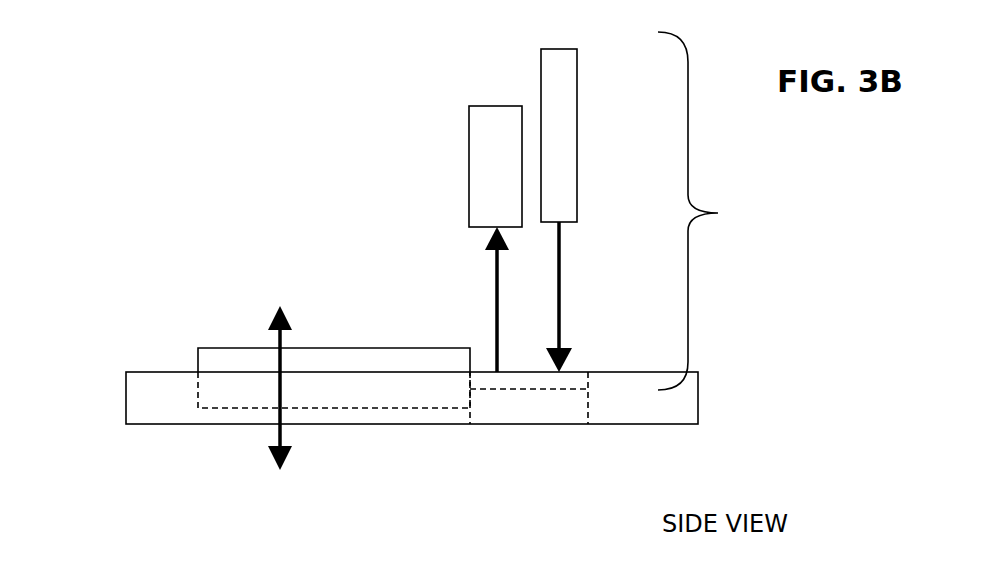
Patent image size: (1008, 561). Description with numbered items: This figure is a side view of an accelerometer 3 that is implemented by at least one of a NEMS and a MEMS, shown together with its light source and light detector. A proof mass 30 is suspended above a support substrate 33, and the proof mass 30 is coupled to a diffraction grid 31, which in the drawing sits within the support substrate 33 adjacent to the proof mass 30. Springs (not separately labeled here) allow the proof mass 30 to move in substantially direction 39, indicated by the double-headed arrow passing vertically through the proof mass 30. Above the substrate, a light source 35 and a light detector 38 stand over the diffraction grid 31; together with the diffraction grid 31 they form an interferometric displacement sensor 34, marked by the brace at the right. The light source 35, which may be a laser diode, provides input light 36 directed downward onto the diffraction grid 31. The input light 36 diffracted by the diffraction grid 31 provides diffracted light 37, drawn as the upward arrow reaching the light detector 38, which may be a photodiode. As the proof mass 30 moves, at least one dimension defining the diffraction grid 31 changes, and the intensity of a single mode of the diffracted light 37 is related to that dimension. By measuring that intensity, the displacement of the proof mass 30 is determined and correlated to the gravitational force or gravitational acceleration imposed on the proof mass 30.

The accelerometer 3 is at (294, 188).
The proof mass 30 is at (235, 362).
The diffraction grid 31 is at (525, 382).
The support substrate 33 is at (148, 395).
The interferometric displacement sensor 34 is at (712, 211).
The light source 35 is at (558, 82).
The input light 36 is at (563, 307).
The diffracted light 37 is at (495, 317).
The light detector 38 is at (490, 184).
The direction 39 is at (275, 432).